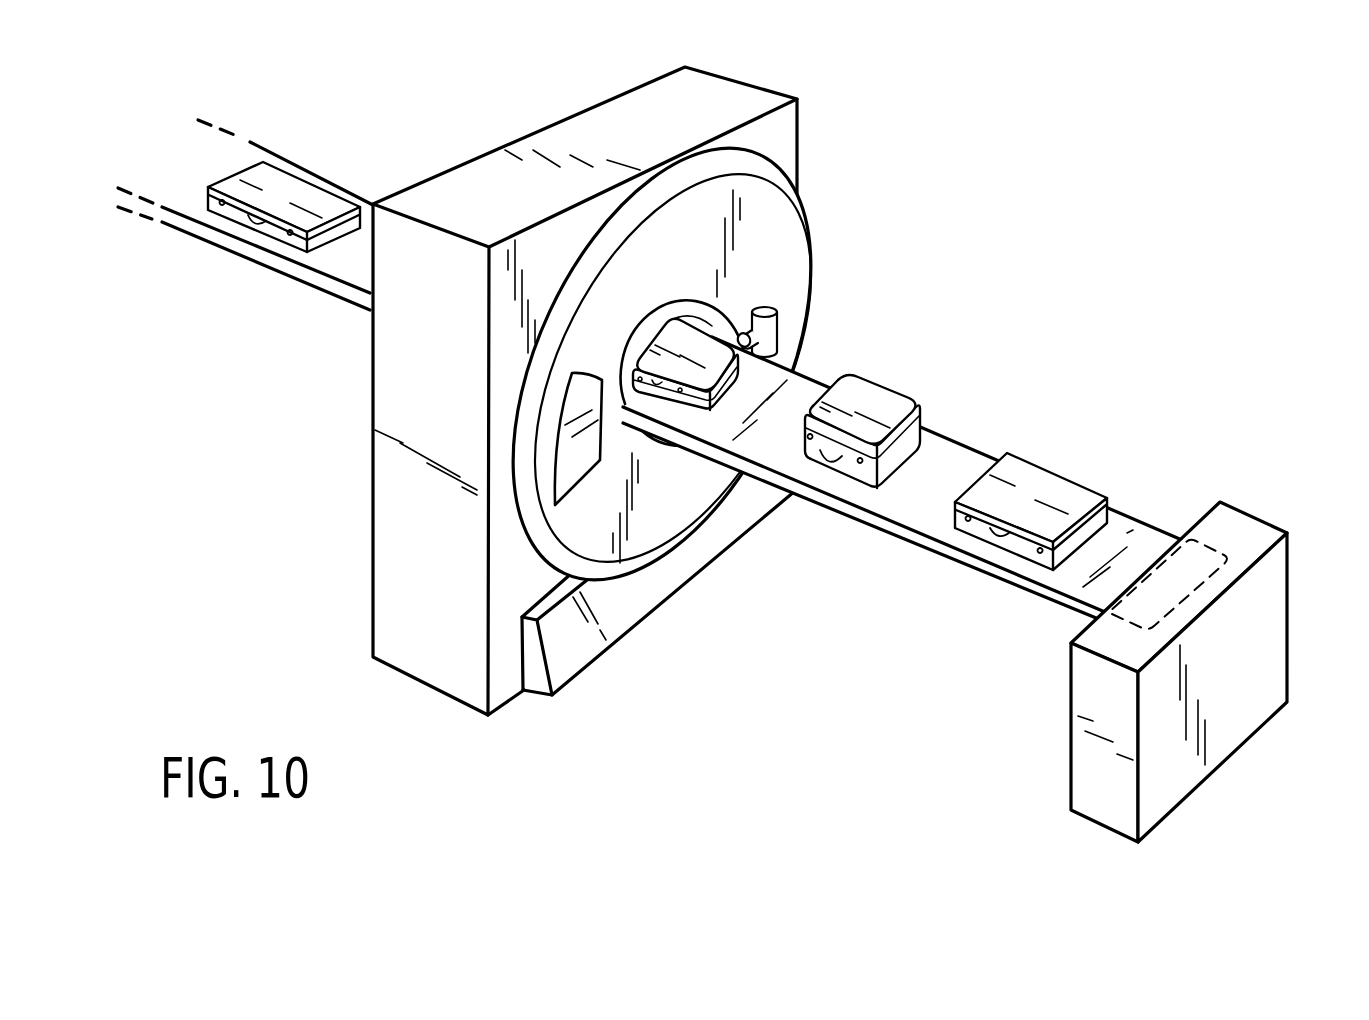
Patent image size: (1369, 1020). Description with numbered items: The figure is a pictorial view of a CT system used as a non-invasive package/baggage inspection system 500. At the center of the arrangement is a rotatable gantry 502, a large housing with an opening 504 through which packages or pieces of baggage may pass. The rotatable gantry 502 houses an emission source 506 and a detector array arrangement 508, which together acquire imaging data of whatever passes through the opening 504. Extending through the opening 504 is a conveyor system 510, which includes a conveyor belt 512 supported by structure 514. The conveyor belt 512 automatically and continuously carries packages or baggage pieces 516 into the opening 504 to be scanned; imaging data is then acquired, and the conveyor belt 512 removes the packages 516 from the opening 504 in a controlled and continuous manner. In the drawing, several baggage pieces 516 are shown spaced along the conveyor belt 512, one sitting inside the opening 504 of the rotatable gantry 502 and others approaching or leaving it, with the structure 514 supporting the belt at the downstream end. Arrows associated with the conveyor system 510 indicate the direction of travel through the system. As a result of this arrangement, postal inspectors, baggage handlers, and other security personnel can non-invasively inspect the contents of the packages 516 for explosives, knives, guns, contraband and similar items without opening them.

The package/baggage inspection system 500 is at (1075, 252).
The rotatable gantry 502 is at (794, 241).
The opening 504 is at (702, 311).
The emission source 506 is at (776, 327).
The detector array arrangement 508 is at (572, 473).
The conveyor system 510 is at (108, 239).
The conveyor belt 512 is at (323, 268).
The structure 514 is at (1273, 632).
The packages or baggage pieces 516 is at (300, 187).